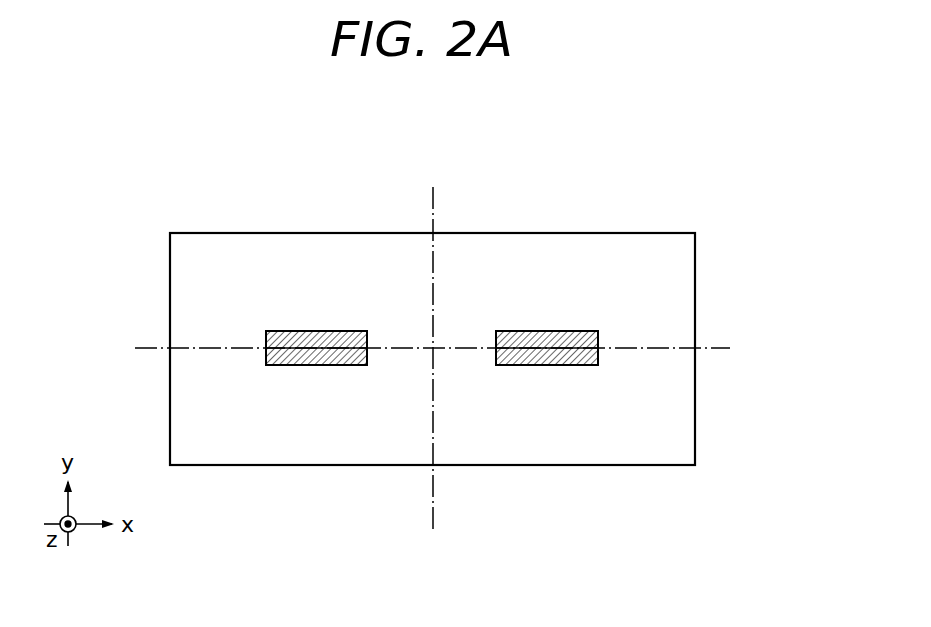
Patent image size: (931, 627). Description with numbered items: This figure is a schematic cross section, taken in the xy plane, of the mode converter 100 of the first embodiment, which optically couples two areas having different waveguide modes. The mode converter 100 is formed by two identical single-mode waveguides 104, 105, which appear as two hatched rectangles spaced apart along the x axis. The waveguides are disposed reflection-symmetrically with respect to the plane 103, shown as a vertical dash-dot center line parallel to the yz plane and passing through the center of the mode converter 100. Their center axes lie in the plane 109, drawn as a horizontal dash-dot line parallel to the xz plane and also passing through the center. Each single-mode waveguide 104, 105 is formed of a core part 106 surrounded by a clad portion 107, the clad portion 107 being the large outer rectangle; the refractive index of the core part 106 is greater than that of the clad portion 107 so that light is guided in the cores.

The mode converter 100 is at (470, 174).
The plane 103 is at (433, 493).
The single-mode waveguide 104 is at (562, 331).
The single-mode waveguide 105 is at (306, 331).
The core part 106 is at (314, 350).
The clad portion 107 is at (670, 403).
The plane 109 is at (715, 348).